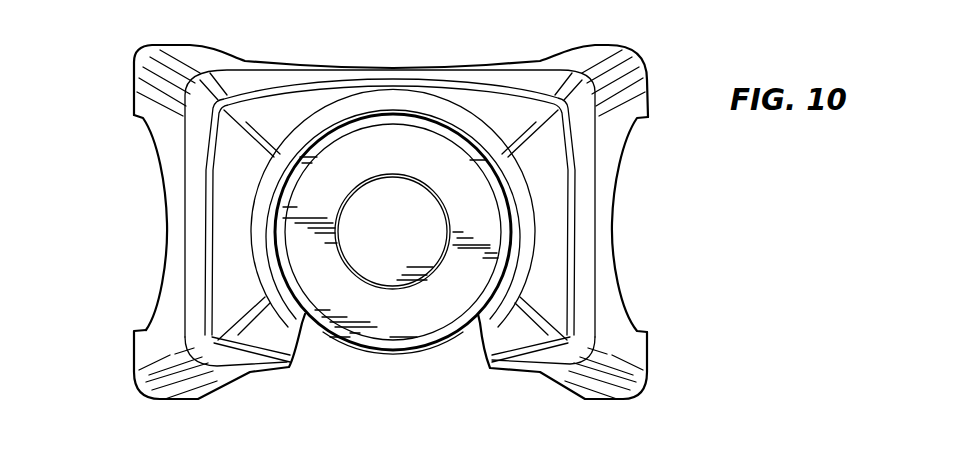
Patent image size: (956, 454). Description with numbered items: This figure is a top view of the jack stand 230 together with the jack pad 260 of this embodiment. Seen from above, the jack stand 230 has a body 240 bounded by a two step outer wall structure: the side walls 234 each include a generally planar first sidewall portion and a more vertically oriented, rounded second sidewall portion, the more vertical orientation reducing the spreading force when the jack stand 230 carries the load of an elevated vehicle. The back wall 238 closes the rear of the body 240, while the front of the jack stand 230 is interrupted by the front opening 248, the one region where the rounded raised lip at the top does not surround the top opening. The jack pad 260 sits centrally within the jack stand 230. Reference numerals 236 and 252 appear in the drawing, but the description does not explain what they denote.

The jack stand 230 is at (661, 40).
The side walls 234 is at (608, 286).
The foot 236 is at (207, 388).
The back wall 238 is at (247, 65).
The body 240 is at (92, 163).
The front opening 248 is at (393, 367).
The flange surface 252 is at (418, 60).
The jack pad 260 is at (435, 326).